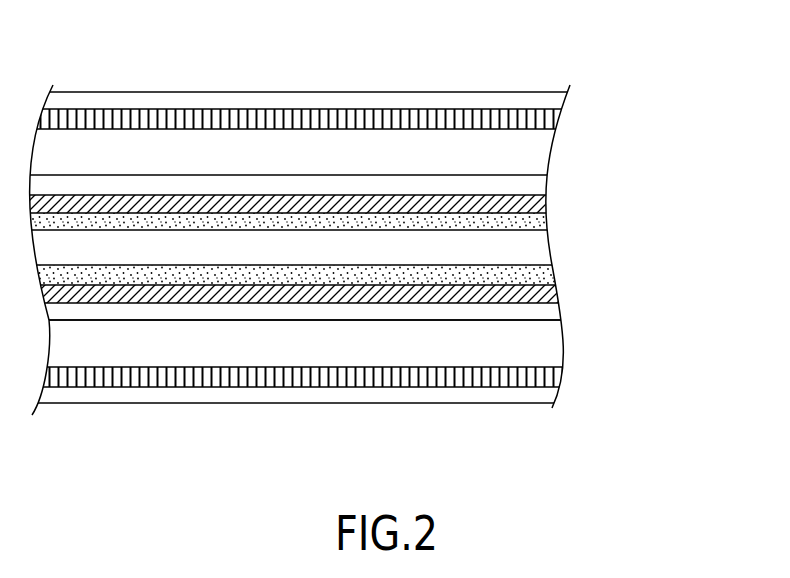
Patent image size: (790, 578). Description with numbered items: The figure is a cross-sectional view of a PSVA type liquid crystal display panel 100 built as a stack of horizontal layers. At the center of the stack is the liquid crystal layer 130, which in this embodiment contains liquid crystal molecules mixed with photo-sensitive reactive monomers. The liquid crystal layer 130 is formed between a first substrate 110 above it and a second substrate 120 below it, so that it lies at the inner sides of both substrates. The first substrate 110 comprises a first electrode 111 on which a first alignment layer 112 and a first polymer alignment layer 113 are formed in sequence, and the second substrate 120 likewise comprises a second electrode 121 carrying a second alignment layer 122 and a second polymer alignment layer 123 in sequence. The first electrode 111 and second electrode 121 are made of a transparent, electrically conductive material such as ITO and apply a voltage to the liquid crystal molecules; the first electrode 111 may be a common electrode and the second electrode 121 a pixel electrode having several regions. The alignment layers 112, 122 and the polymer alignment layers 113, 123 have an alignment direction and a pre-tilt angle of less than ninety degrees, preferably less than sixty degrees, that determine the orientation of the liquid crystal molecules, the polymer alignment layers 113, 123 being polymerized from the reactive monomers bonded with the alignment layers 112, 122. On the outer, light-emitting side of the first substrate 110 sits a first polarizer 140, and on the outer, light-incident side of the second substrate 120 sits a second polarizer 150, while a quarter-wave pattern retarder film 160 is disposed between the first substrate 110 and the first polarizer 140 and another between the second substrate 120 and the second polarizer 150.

The liquid crystal display panel 100 is at (395, 241).
The first substrate 110 is at (533, 144).
The first electrode 111 is at (528, 182).
The first alignment layer 112 is at (540, 195).
The first polymer alignment layer 113 is at (545, 216).
The second substrate 120 is at (550, 347).
The second electrode 121 is at (550, 311).
The second alignment layer 122 is at (562, 292).
The second polymer alignment layer 123 is at (555, 272).
The liquid crystal layer 130 is at (538, 246).
The first polarizer 140 is at (505, 100).
The second polarizer 150 is at (555, 395).
The quarter wave pattern retarder film 160 is at (540, 119).